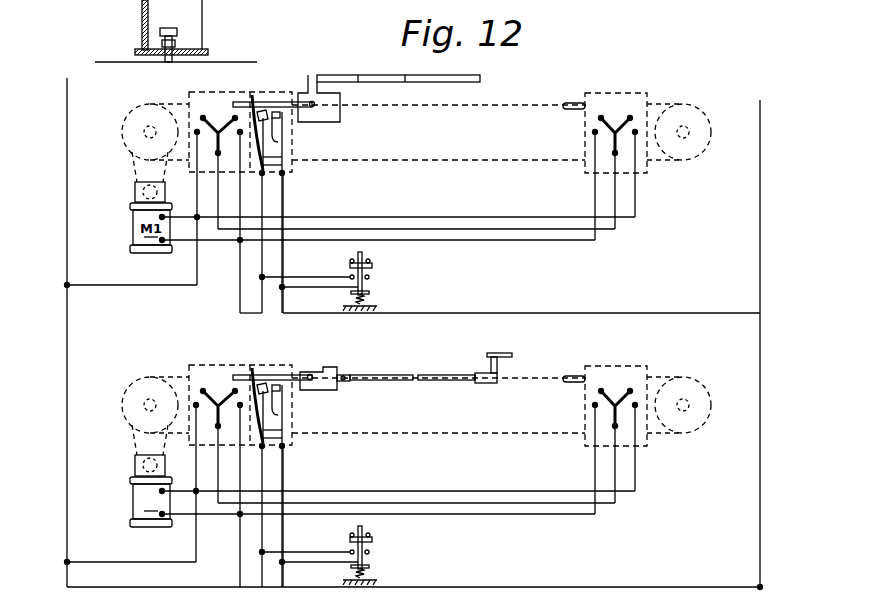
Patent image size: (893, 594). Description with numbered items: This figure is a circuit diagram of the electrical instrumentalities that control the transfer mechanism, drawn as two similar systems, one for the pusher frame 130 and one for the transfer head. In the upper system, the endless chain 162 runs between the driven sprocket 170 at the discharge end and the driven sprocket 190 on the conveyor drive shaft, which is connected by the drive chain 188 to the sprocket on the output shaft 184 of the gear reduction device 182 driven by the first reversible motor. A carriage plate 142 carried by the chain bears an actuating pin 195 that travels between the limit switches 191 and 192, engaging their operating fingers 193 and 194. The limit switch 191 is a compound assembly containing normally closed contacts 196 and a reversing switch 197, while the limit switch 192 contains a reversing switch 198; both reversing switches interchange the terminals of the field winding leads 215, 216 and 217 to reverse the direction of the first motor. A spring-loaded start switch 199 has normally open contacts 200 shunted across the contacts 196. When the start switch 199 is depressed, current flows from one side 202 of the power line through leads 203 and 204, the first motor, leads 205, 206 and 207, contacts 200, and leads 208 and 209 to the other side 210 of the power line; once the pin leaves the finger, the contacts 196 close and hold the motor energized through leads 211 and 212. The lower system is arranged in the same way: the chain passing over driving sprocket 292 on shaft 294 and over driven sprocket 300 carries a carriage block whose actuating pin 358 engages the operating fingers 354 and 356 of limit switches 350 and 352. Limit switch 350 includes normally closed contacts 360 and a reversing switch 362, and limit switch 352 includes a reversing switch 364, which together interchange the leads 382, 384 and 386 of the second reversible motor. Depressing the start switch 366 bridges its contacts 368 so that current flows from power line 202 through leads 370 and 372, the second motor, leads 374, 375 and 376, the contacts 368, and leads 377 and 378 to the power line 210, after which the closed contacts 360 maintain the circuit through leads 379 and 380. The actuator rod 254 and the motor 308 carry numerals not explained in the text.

The pusher frame 130 is at (383, 83).
The carriage plate 142 is at (340, 110).
The endless chain 162 is at (440, 108).
The driven sprocket 170 is at (697, 107).
The gear reduction device 182 is at (135, 196).
The output shaft 184 is at (135, 207).
The drive chain 188 is at (132, 168).
The driven sprocket 190 is at (134, 112).
The limit switch 191 is at (226, 92).
The limit switch 192 is at (648, 93).
The operating finger 193 is at (305, 108).
The operating finger 194 is at (575, 103).
The actuating pin 195 is at (318, 115).
The normally closed contacts 196 is at (281, 139).
The reversing switch 197 is at (215, 113).
The reversing switch 198 is at (615, 118).
The start switch 199 is at (373, 266).
The normally open contacts 200 is at (370, 280).
The power line side 202 is at (67, 130).
The lead 203 is at (148, 285).
The lead 204 is at (186, 214).
The lead 205 is at (208, 240).
The lead 206 is at (240, 290).
The lead 207 is at (322, 277).
The lead 208 is at (293, 288).
The lead 209 is at (552, 313).
The power line side 210 is at (760, 232).
The lead 211 is at (262, 211).
The lead 212 is at (282, 208).
The lead 215 is at (432, 217).
The lead 216 is at (484, 229).
The lead 217 is at (572, 240).
The actuator rod 254 is at (398, 375).
The driving sprocket 292 is at (140, 383).
The shaft 294 is at (135, 472).
The driven sprocket 300 is at (700, 382).
The motor M2 308 is at (131, 483).
The limit switch 350 is at (232, 364).
The limit switch 352 is at (640, 366).
The operating finger 354 is at (272, 374).
The operating finger 356 is at (573, 376).
The actuating pin 358 is at (312, 390).
The normally closed contacts 360 is at (276, 410).
The reversing switch 362 is at (215, 386).
The reversing switch 364 is at (612, 391).
The start switch 366 is at (373, 540).
The normally open push button contacts 368 is at (370, 555).
The lead 370 is at (122, 562).
The lead 372 is at (172, 491).
The lead 374 is at (208, 514).
The lead 375 is at (240, 566).
The lead 376 is at (322, 552).
The lead 377 is at (293, 563).
The lead 378 is at (532, 587).
The lead 379 is at (264, 467).
The lead 380 is at (283, 479).
The lead 382 is at (196, 466).
The lead 384 is at (216, 464).
The lead 386 is at (454, 515).